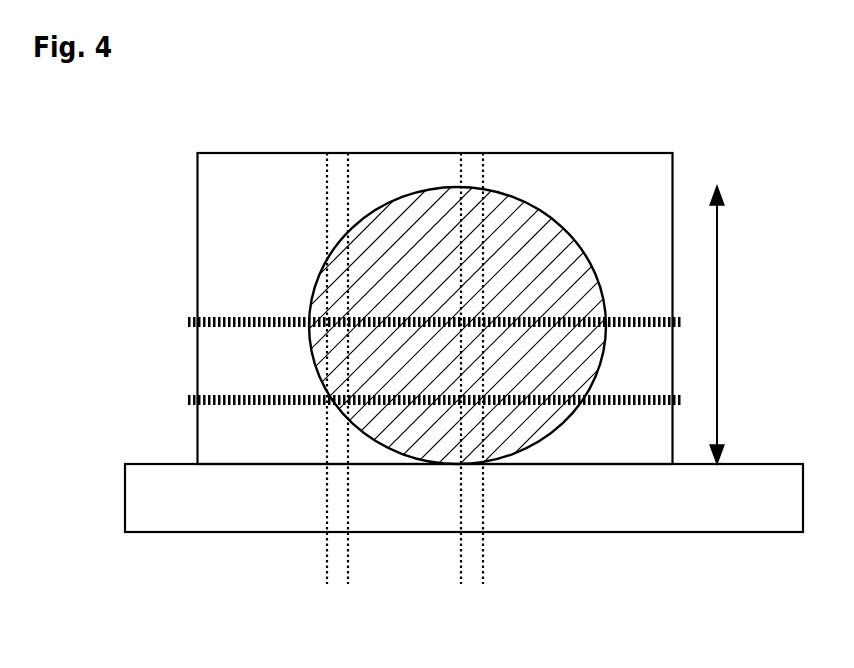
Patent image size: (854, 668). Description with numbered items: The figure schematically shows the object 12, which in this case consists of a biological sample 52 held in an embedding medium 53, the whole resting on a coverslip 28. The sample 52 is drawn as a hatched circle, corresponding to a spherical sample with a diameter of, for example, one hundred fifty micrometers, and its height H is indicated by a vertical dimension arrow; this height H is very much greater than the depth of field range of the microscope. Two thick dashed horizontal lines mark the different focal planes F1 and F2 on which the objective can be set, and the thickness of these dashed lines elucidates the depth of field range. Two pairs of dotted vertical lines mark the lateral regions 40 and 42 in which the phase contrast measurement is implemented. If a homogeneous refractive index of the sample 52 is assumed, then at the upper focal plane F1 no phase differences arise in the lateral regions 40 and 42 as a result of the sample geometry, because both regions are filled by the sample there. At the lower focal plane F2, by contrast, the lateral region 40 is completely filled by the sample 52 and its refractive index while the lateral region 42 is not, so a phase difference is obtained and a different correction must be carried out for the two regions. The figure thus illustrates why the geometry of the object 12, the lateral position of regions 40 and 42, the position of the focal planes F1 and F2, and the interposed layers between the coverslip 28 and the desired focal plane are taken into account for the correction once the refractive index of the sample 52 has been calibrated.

The object 12 is at (203, 138).
The embedding medium 53 is at (208, 203).
The biological sample 52 is at (432, 208).
The focal plane F1 is at (197, 320).
The focal plane F2 is at (197, 396).
The coverslip 28 is at (137, 503).
The height H is at (727, 325).
The lateral region 42 is at (338, 560).
The lateral region 40 is at (472, 558).